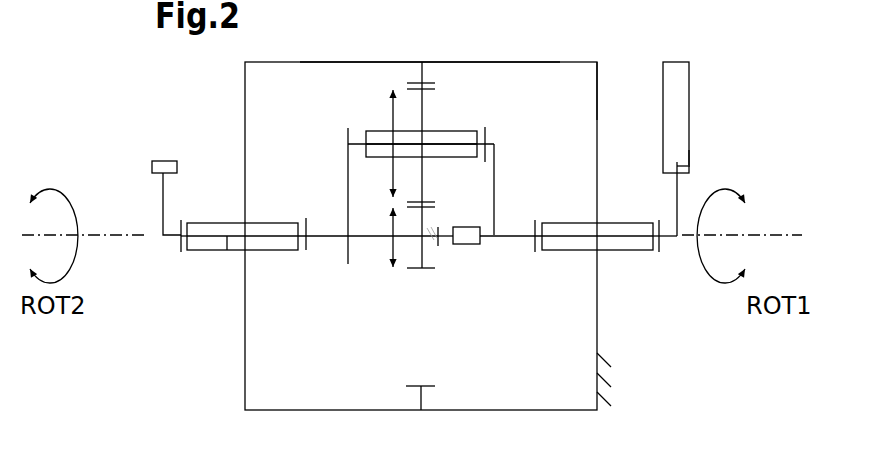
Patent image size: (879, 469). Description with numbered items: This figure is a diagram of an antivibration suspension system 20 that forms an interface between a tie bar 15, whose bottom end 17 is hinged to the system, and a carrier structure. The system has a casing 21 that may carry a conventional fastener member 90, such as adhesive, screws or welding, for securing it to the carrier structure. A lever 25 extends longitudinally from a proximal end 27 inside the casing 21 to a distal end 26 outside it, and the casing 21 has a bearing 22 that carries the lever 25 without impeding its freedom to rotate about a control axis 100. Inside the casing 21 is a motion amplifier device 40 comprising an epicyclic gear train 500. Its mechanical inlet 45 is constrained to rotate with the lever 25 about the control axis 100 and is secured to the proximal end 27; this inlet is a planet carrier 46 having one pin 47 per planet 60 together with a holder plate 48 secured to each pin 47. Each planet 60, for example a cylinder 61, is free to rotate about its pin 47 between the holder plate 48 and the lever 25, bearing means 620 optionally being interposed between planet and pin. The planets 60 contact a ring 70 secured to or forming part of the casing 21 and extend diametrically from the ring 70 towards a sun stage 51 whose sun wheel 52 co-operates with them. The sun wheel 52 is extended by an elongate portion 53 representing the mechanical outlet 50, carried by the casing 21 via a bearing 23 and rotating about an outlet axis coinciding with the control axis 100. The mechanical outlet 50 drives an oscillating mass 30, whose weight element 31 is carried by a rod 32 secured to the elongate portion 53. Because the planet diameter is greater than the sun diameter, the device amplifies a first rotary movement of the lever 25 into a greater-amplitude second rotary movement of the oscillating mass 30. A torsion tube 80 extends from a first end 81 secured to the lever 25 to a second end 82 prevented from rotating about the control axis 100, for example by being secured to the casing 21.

The tie bar 15 is at (680, 103).
The bottom end 17 is at (690, 157).
The antivibration suspension system 20 is at (400, 50).
The casing 21 is at (702, 60).
The bearing 22 is at (618, 223).
The bearing 23 is at (287, 223).
The lever 25 is at (668, 238).
The distal end 26 is at (681, 167).
The proximal end 27 is at (494, 186).
The oscillating mass 30 is at (145, 188).
The weight element 31 is at (160, 161).
The rod 32 is at (165, 197).
The motion amplifier device 40 is at (297, 298).
The mechanical inlet 45 is at (481, 130).
The planet carrier 46 is at (497, 133).
The pin 47 is at (379, 137).
The holder plate 48 is at (348, 137).
The mechanical outlet 50 is at (366, 308).
The sun stage 51 is at (322, 250).
The sun wheel 52 is at (421, 255).
The elongate portion 53 is at (227, 250).
The planet 60 is at (443, 107).
The cylinder 61 is at (432, 82).
The ring 70 is at (428, 386).
The torsion tube 80 is at (468, 225).
The first end 81 is at (487, 243).
The second end 82 is at (443, 243).
The fastener member 90 is at (614, 363).
The control axis 100 is at (117, 237).
The epicyclic gear train 500 is at (400, 338).
The bearing means 620 is at (372, 135).